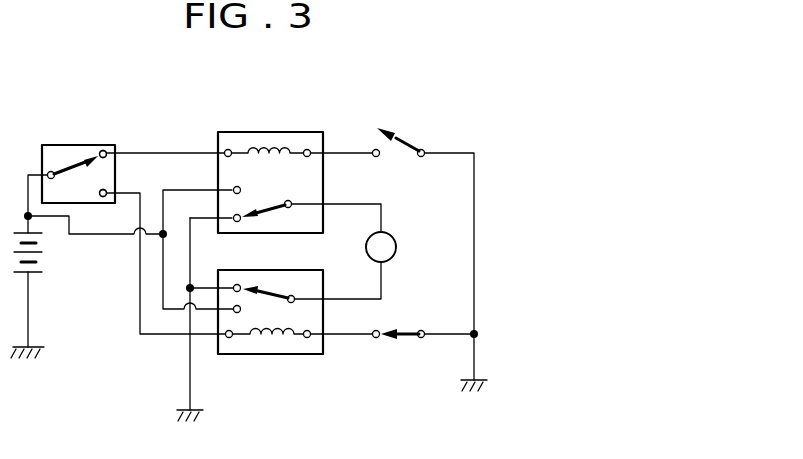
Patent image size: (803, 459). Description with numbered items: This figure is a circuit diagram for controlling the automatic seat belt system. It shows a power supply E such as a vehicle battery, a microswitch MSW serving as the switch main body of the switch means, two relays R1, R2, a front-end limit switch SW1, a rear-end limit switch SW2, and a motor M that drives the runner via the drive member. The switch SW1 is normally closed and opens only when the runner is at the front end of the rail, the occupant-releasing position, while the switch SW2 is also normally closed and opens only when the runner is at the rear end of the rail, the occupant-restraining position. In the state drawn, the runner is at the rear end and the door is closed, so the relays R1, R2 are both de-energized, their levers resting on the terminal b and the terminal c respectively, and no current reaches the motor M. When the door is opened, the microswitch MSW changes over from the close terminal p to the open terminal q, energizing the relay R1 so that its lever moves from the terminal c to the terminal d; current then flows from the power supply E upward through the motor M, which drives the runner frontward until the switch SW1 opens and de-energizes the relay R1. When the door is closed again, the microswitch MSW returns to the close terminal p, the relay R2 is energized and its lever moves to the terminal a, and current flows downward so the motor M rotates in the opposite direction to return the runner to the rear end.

The microswitch MSW is at (120, 150).
The relay R1 is at (270, 332).
The relay R2 is at (275, 158).
The front-end limit switch SW1 is at (403, 331).
The rear-end limit switch SW2 is at (406, 143).
The power supply E is at (33, 274).
The motor M is at (381, 247).
The close terminal p is at (106, 164).
The open terminal q is at (92, 187).
The terminal a is at (236, 177).
The terminal b is at (236, 203).
The terminal c is at (247, 276).
The terminal d is at (247, 306).